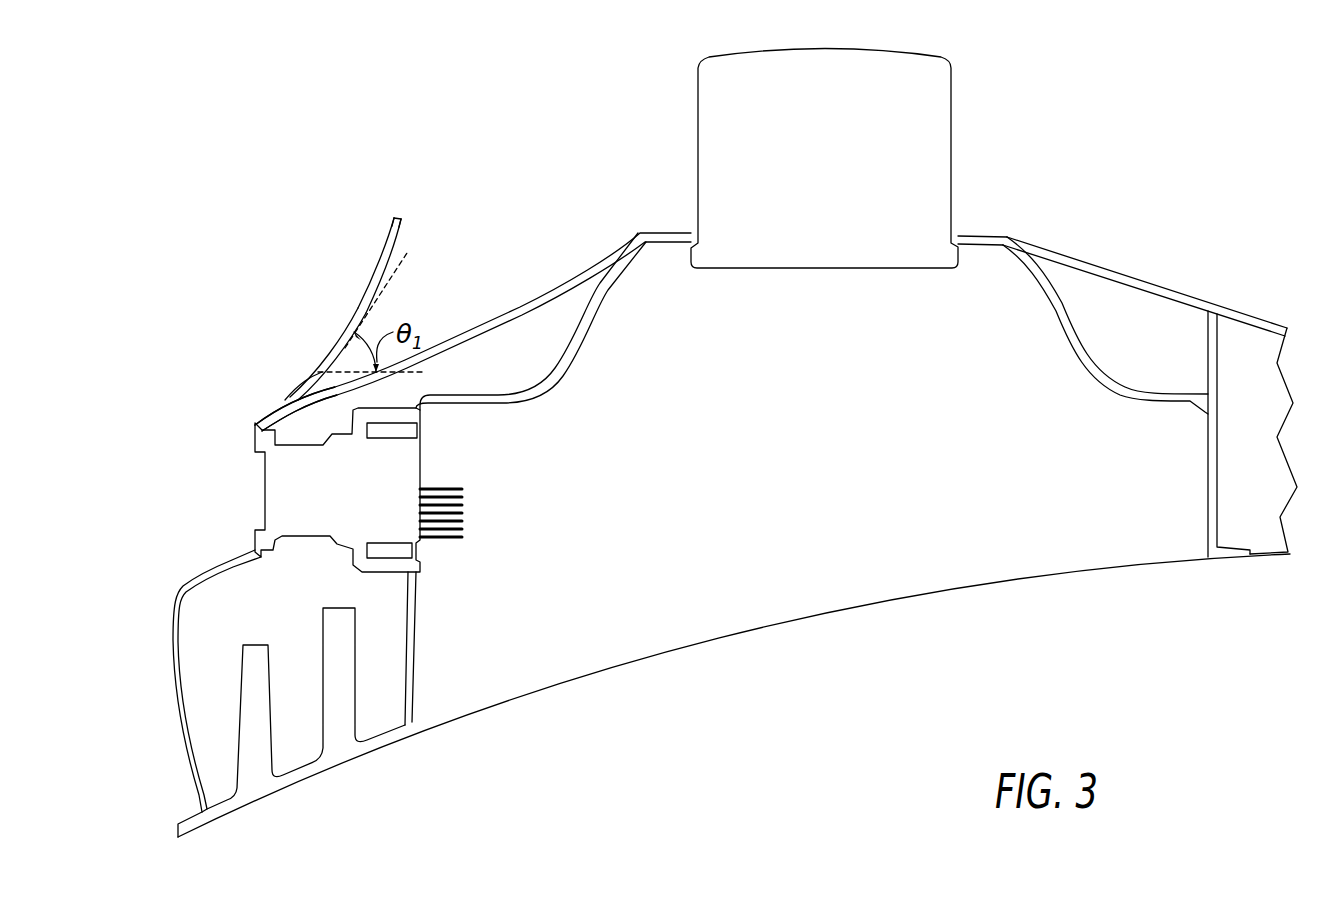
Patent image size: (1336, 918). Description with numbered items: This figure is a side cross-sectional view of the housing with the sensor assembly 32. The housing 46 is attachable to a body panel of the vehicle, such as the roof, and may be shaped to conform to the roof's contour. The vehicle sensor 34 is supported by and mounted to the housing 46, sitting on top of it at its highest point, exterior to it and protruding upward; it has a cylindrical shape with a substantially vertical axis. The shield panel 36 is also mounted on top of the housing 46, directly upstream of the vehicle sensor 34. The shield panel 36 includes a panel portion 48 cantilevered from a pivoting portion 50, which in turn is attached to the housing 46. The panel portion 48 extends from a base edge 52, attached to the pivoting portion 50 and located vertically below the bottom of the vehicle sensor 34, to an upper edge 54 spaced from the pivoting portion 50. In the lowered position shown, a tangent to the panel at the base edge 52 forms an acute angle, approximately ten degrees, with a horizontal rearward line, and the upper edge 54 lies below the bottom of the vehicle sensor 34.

The sensor assembly 32 is at (998, 39).
The vehicle sensor 34 is at (953, 143).
The shield panel 36 is at (372, 268).
The housing 46 is at (1146, 278).
The panel portion 48 is at (342, 332).
The pivoting portion 50 is at (303, 396).
The base edge 52 is at (316, 373).
The upper edge 54 is at (398, 216).